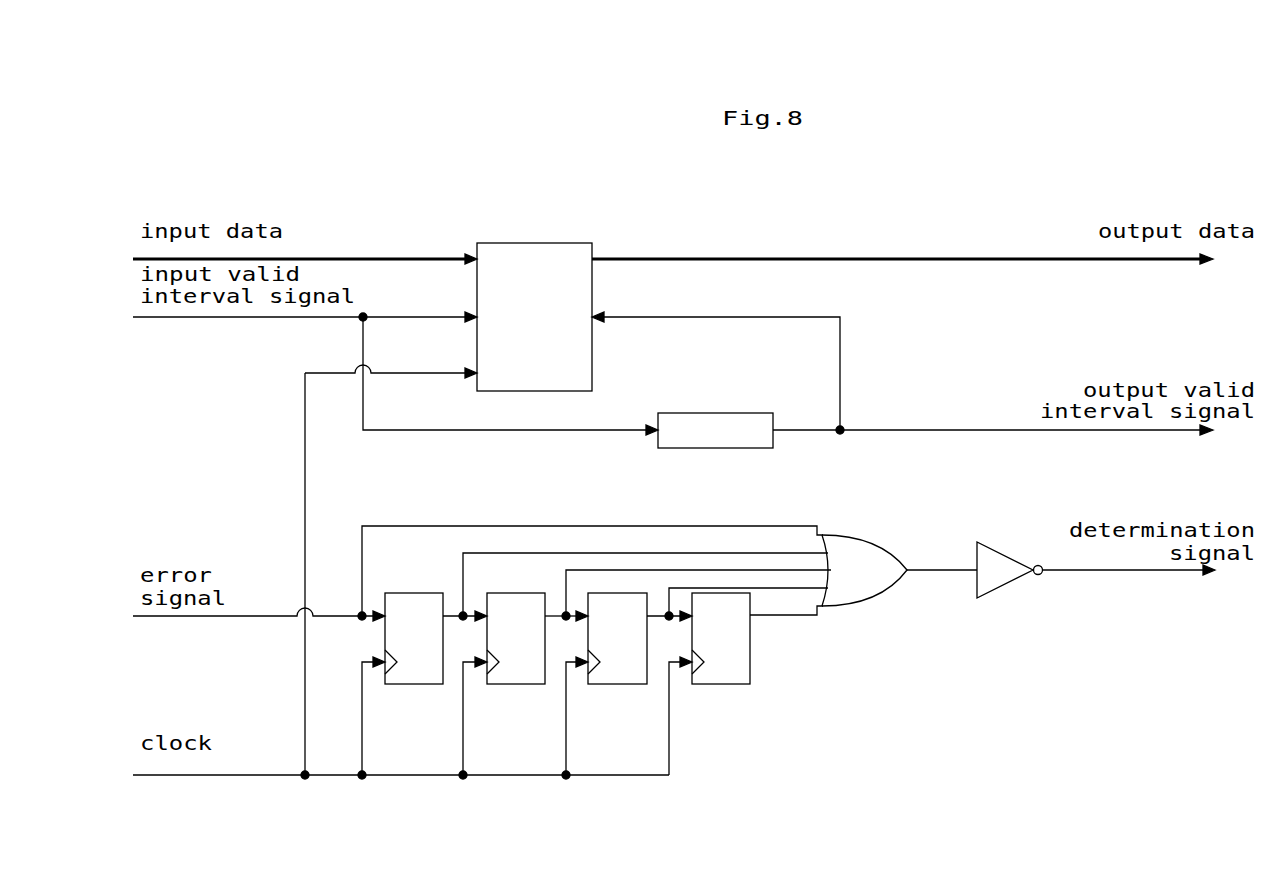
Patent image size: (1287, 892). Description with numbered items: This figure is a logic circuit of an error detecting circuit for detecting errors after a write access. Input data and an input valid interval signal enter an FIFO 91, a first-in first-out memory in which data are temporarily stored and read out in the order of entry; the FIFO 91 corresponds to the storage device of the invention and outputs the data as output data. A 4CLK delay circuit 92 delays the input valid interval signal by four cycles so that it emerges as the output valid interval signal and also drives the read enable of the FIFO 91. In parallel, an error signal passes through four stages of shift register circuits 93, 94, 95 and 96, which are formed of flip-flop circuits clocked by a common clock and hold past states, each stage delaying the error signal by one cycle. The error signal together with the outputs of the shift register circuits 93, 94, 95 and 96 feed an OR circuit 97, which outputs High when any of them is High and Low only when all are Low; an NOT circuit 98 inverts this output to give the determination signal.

The FIFO 91 is at (592, 368).
The 4CLK delay circuit 92 is at (712, 448).
The shift register circuit 93 is at (412, 684).
The shift register circuit 94 is at (509, 684).
The shift register circuit 95 is at (617, 684).
The shift register circuit 96 is at (719, 684).
The OR circuit 97 is at (853, 536).
The NOT circuit 98 is at (1008, 565).